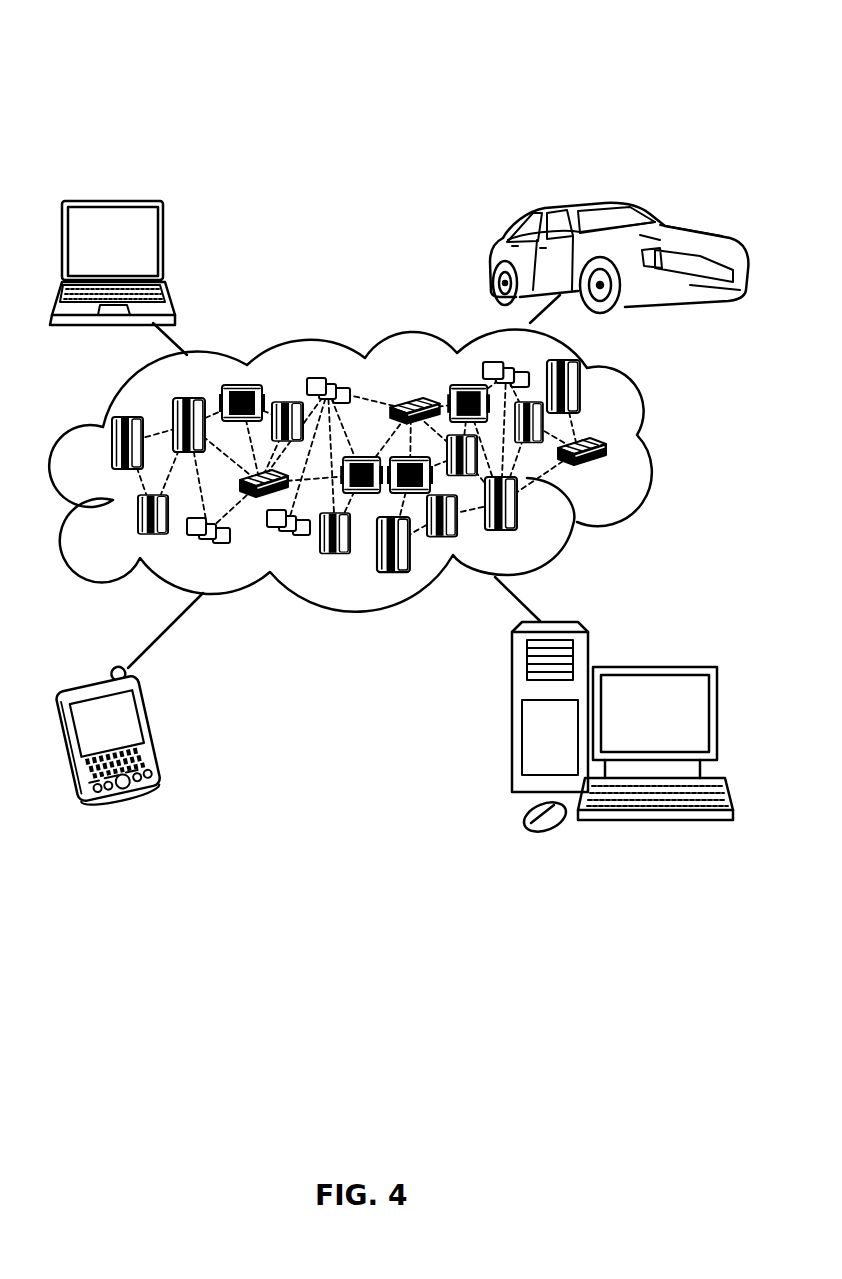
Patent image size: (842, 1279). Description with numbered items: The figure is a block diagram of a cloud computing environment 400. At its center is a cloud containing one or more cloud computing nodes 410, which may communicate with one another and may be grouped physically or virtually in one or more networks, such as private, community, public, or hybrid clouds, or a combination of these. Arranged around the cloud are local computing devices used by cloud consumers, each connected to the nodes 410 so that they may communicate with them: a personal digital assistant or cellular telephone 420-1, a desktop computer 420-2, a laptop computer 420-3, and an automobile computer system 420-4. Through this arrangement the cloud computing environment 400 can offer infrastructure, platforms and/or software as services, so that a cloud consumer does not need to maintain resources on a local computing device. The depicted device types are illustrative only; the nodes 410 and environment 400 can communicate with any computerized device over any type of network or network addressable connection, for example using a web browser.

The cloud computing environment 400 is at (259, 54).
The cloud computing nodes 410 is at (615, 477).
The personal digital assistant (PDA) or cellular telephone 420-1 is at (155, 736).
The desktop computer 420-2 is at (652, 666).
The laptop computer 420-3 is at (166, 248).
The automobile computer system 420-4 is at (486, 262).